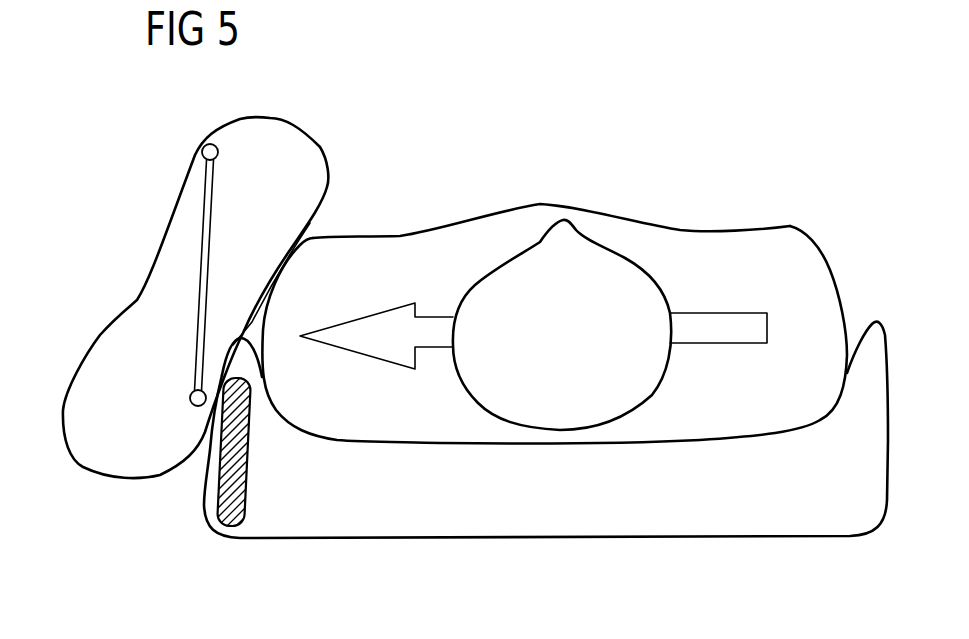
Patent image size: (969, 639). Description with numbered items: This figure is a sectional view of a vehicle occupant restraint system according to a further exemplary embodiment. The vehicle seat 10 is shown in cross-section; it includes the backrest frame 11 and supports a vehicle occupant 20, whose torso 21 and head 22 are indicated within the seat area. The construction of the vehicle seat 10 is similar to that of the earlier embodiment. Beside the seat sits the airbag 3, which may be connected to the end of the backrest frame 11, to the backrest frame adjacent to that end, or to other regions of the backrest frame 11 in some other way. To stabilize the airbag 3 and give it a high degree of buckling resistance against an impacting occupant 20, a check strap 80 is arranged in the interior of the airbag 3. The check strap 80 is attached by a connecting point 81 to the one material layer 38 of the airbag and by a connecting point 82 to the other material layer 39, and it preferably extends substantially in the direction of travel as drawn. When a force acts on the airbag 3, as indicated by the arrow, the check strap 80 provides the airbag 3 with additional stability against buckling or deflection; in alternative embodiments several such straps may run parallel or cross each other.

The airbag 3 is at (150, 232).
The vehicle seat 10 is at (542, 527).
The backrest frame 11 is at (245, 480).
The vehicle occupant 20 is at (793, 225).
The torso 21 is at (692, 245).
The head 22 is at (640, 383).
The material layer 38 is at (137, 297).
The material layer 39 is at (312, 222).
The check strap 80 is at (210, 237).
The connecting point 81 is at (219, 155).
The connecting point 82 is at (191, 404).